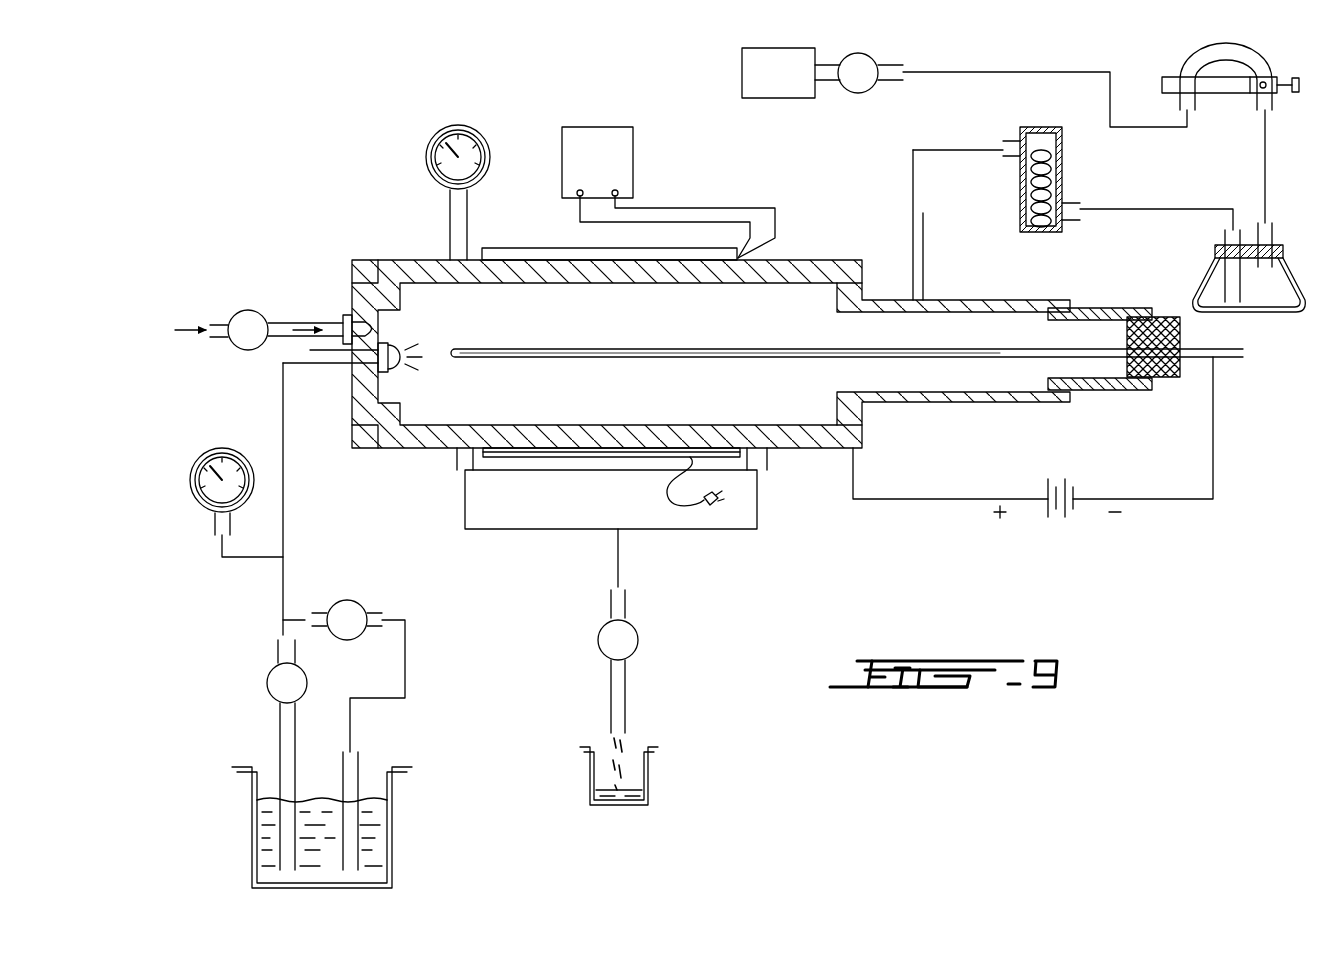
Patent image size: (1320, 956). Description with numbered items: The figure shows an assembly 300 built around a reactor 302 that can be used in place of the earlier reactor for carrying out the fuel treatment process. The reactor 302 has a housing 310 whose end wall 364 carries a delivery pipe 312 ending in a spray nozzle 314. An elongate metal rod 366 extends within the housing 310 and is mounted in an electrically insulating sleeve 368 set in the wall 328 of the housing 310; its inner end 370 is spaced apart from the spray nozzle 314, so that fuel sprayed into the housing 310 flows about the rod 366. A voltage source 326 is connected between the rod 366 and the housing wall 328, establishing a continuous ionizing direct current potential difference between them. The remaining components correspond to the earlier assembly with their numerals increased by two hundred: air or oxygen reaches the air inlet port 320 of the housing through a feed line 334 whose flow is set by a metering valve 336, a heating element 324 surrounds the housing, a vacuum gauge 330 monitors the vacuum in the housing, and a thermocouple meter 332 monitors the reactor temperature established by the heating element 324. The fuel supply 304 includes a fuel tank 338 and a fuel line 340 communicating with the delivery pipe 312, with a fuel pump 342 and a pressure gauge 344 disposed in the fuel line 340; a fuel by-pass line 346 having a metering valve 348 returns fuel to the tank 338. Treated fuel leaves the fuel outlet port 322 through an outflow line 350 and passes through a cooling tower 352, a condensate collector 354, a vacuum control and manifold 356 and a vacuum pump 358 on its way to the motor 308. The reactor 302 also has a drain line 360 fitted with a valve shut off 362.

The assembly 300 is at (268, 190).
The reactor 302 is at (319, 499).
The fuel supply 304 is at (248, 630).
The motor 308 is at (742, 78).
The housing 310 is at (418, 452).
The delivery pipe 312 is at (338, 365).
The spray nozzle 314 is at (402, 372).
The air inlet port 320 is at (385, 328).
The fuel outlet port 322 is at (915, 300).
The heating element 324 is at (577, 457).
The voltage source 326 is at (1080, 488).
The wall 328 is at (775, 285).
The vacuum gauge 330 is at (448, 213).
The thermocouple meter 332 is at (633, 160).
The feed line 334 is at (225, 325).
The metering valve 336 is at (265, 318).
The fuel tank 338 is at (398, 812).
The fuel line 340 is at (283, 738).
The fuel pump 342 is at (275, 682).
The pressure gauge 344 is at (262, 562).
The fuel by-pass line 346 is at (410, 652).
The metering valve 348 is at (358, 602).
The outflow line 350 is at (905, 243).
The cooling tower 352 is at (1060, 108).
The condensate collector 354 is at (1270, 315).
The vacuum control and manifold 356 is at (1210, 50).
The vacuum pump 358 is at (868, 95).
The drain line 360 is at (625, 685).
The valve shut off 362 is at (640, 632).
The end wall 364 is at (378, 455).
The elongate metal rod 366 is at (655, 347).
The electrically insulating sleeve 368 is at (1172, 317).
The inner end 370 is at (460, 349).